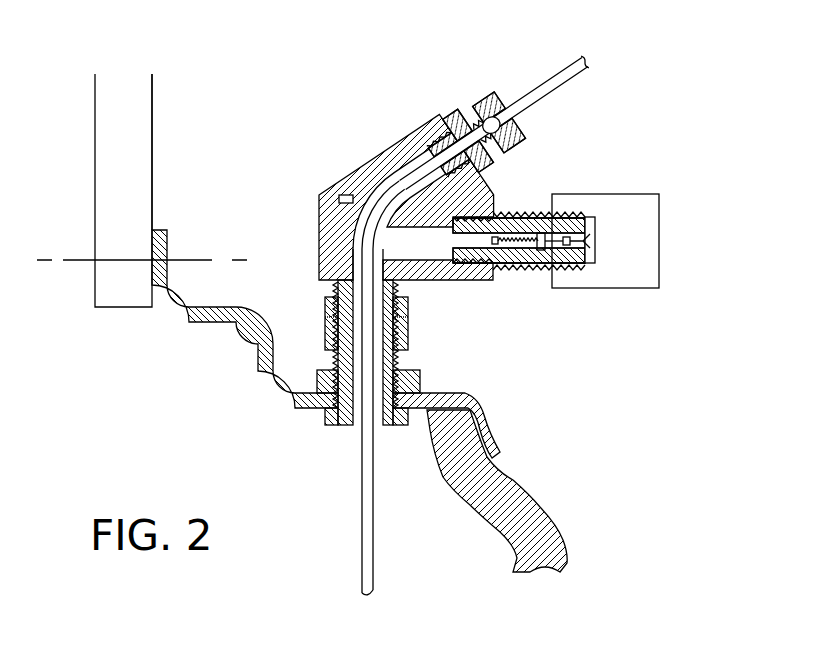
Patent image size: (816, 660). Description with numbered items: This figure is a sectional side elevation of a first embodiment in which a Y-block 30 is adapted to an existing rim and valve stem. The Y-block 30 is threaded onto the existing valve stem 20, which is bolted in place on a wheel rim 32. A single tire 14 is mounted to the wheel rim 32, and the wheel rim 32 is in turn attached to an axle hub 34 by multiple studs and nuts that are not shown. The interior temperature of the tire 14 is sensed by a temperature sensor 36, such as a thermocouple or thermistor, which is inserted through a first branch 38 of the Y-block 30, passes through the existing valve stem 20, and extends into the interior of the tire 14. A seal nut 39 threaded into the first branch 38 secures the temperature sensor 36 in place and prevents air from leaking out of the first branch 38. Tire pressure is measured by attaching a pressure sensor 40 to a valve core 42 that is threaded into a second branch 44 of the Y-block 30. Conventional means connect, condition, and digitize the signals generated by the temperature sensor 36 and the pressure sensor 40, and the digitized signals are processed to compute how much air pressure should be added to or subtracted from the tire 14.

The tire 14 is at (533, 523).
The valve stem 20 is at (410, 378).
The Y-block 30 is at (327, 190).
The wheel rim 32 is at (288, 410).
The axle hub 34 is at (132, 155).
The temperature sensor 36 is at (362, 537).
The first branch 38 is at (383, 132).
The seal nut 39 is at (500, 101).
The pressure sensor 40 is at (634, 243).
The valve core 42 is at (537, 268).
The second branch 44 is at (498, 194).